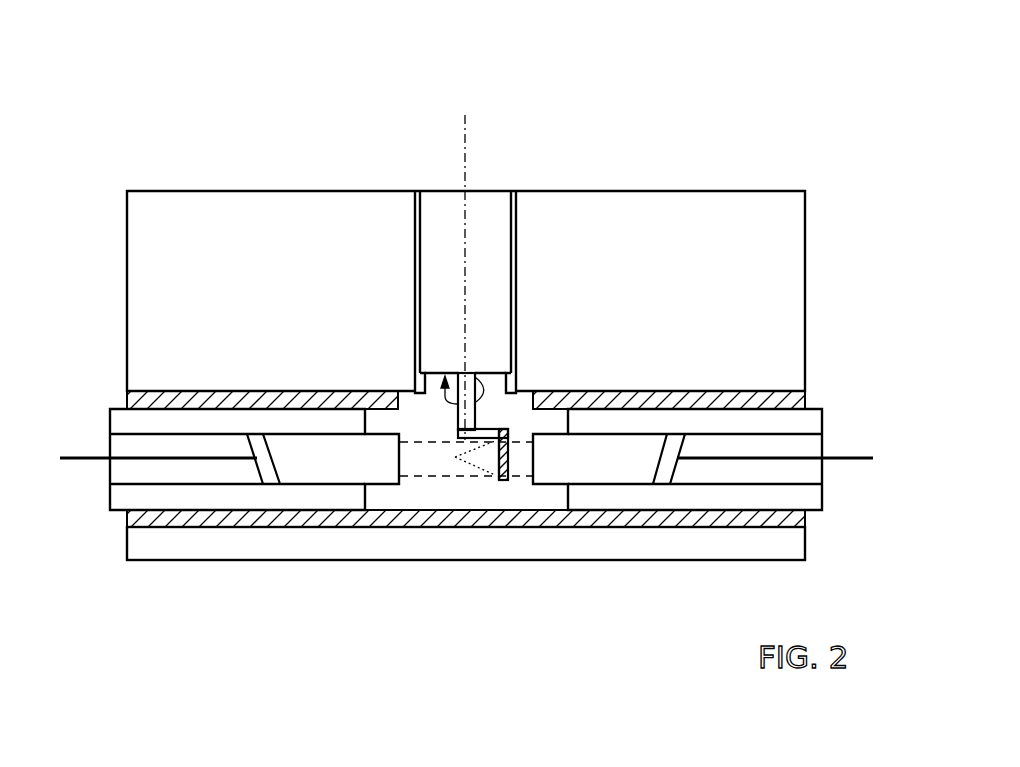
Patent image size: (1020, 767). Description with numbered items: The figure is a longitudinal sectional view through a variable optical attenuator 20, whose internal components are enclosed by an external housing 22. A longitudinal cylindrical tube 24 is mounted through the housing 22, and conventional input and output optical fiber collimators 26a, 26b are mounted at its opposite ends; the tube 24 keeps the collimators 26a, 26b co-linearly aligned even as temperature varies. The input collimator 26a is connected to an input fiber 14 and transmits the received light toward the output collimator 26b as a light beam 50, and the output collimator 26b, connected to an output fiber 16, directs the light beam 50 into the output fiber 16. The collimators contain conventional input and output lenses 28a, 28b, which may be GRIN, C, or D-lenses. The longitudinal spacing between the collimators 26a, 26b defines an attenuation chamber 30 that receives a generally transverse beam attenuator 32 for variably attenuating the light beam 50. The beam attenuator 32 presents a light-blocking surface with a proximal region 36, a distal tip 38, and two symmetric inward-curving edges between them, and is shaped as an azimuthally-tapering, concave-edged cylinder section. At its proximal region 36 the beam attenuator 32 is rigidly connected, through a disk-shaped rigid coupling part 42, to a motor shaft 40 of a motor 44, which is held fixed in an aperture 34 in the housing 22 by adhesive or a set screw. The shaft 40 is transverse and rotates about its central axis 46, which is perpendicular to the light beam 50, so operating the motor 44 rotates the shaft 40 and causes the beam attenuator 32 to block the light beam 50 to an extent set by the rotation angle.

The optical attenuator 20 is at (640, 75).
The external housing 22 is at (627, 190).
The longitudinal cylindrical tube 24 is at (810, 517).
The input fiber 14 is at (85, 457).
The output fiber 16 is at (848, 457).
The input collimator 26a is at (86, 480).
The output collimator 26b is at (857, 490).
The input lens 28a is at (335, 468).
The output lens 28b is at (608, 468).
The attenuation chamber 30 is at (520, 499).
The beam attenuator 32 is at (470, 463).
The aperture 34 is at (517, 265).
The proximal region 36 is at (507, 428).
The distal tip 38 is at (454, 460).
The motor shaft 40 is at (457, 419).
The coupling part 42 is at (453, 432).
The motor 44 is at (500, 283).
The central axis 46 is at (465, 160).
The light beam 50 is at (426, 478).